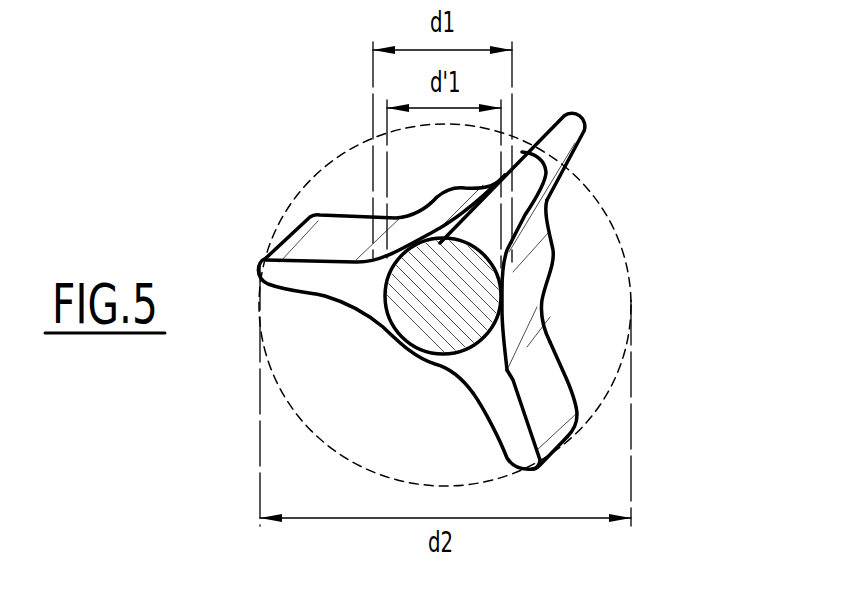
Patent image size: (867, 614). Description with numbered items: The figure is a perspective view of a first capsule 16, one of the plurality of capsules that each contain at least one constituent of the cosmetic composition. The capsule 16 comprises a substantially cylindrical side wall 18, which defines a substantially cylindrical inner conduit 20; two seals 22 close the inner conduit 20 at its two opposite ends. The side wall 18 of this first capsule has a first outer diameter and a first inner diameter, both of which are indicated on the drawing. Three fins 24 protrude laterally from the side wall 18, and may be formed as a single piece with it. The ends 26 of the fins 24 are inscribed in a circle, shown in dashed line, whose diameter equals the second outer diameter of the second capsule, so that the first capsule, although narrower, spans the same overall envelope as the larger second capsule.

The capsule 16 is at (612, 147).
The side wall 18 is at (530, 277).
The inner conduit 20 is at (444, 298).
The seal 22 is at (418, 326).
The fin 24 is at (547, 397).
The end 26 is at (580, 451).